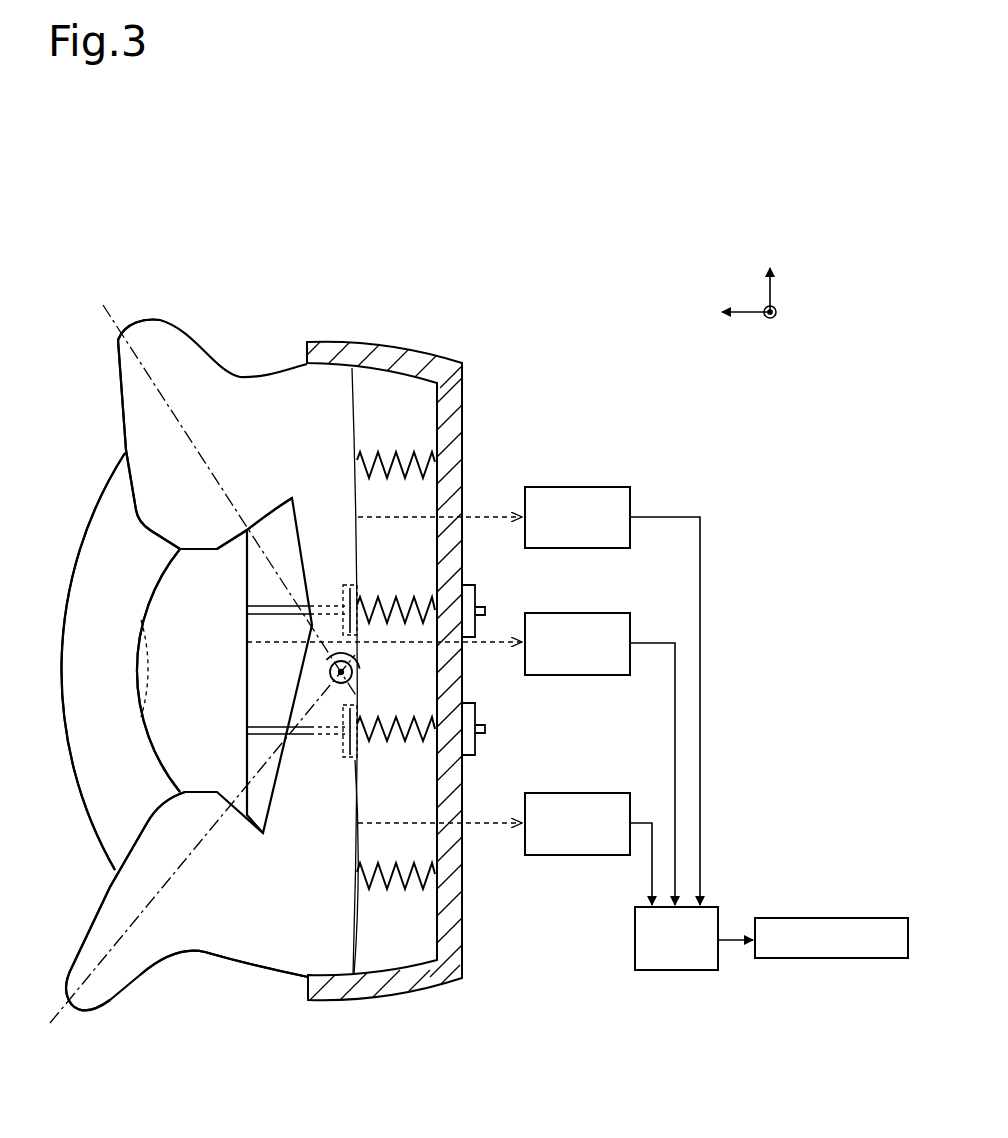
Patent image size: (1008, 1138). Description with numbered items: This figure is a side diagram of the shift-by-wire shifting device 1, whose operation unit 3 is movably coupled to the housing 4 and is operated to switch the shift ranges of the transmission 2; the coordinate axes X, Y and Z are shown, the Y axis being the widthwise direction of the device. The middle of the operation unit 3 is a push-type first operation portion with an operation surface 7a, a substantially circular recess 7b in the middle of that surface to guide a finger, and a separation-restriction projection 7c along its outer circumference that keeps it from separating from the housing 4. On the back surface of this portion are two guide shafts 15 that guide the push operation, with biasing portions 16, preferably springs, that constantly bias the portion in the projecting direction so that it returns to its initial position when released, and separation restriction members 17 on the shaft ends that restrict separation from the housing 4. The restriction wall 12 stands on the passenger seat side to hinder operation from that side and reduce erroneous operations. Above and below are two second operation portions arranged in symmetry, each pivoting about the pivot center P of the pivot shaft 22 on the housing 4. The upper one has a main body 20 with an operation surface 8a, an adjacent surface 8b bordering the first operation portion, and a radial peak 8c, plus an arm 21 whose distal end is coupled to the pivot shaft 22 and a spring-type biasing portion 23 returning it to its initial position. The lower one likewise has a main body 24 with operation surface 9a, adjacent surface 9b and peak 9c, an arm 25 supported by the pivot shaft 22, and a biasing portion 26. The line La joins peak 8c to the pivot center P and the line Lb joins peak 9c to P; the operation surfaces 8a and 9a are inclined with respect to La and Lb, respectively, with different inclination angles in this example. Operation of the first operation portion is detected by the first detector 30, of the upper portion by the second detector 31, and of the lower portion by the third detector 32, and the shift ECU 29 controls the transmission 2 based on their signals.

The shifting device 1 is at (87, 290).
The transmission 2 is at (880, 917).
The operation unit 3 is at (200, 342).
The housing 4 is at (370, 342).
The operation surface 7a is at (145, 608).
The recess 7b is at (138, 672).
The separation-restriction projection 7c is at (245, 530).
The operation surface 8a is at (128, 472).
The adjacent surface 8b is at (152, 538).
The peak 8c is at (153, 338).
The operation surface 9a is at (110, 878).
The adjacent surface 9b is at (155, 812).
The peak 9c is at (68, 975).
The restriction wall 12 is at (70, 608).
The guide shaft 15 is at (265, 606).
The biasing portion 16 is at (405, 600).
The separation restriction member 17 is at (478, 588).
The main body 20 is at (138, 393).
The arm 21 is at (338, 572).
The pivot shaft 22 is at (362, 667).
The biasing portion 23 is at (400, 456).
The main body 24 is at (175, 948).
The arm 25 is at (350, 790).
The biasing portion 26 is at (393, 886).
The shift ECU 29 is at (634, 937).
The first detector 30 is at (578, 612).
The second detector 31 is at (578, 486).
The third detector 32 is at (578, 792).
The line La is at (194, 438).
The line Lb is at (160, 895).
The pivot center P is at (330, 672).
The X-axis direction X is at (732, 317).
The Y-axis direction Y is at (780, 324).
The Z-axis direction Z is at (769, 272).